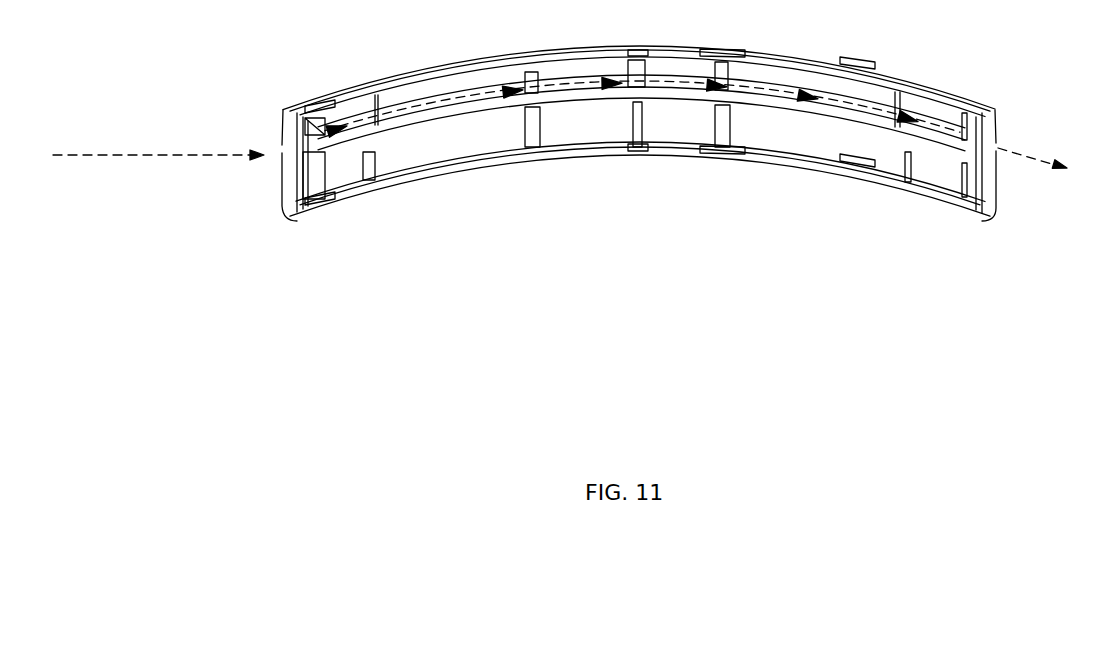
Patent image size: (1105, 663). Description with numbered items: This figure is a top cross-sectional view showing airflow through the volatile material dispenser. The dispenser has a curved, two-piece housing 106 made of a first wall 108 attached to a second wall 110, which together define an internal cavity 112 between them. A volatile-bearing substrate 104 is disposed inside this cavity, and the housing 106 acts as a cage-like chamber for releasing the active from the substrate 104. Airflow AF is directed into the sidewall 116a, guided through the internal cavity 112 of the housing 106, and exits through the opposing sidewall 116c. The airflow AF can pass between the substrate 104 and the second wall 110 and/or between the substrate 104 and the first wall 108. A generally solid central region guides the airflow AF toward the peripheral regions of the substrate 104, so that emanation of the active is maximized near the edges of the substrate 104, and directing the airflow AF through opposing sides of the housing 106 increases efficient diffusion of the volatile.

The housing 106 is at (208, 68).
The second wall 110 is at (374, 82).
The first wall 108 is at (386, 190).
The volatile-bearing substrate 104 is at (460, 113).
The internal cavity 112 is at (843, 151).
The sidewall 116a is at (268, 143).
The sidewall 116c is at (1004, 128).
The airflow AF is at (158, 139).